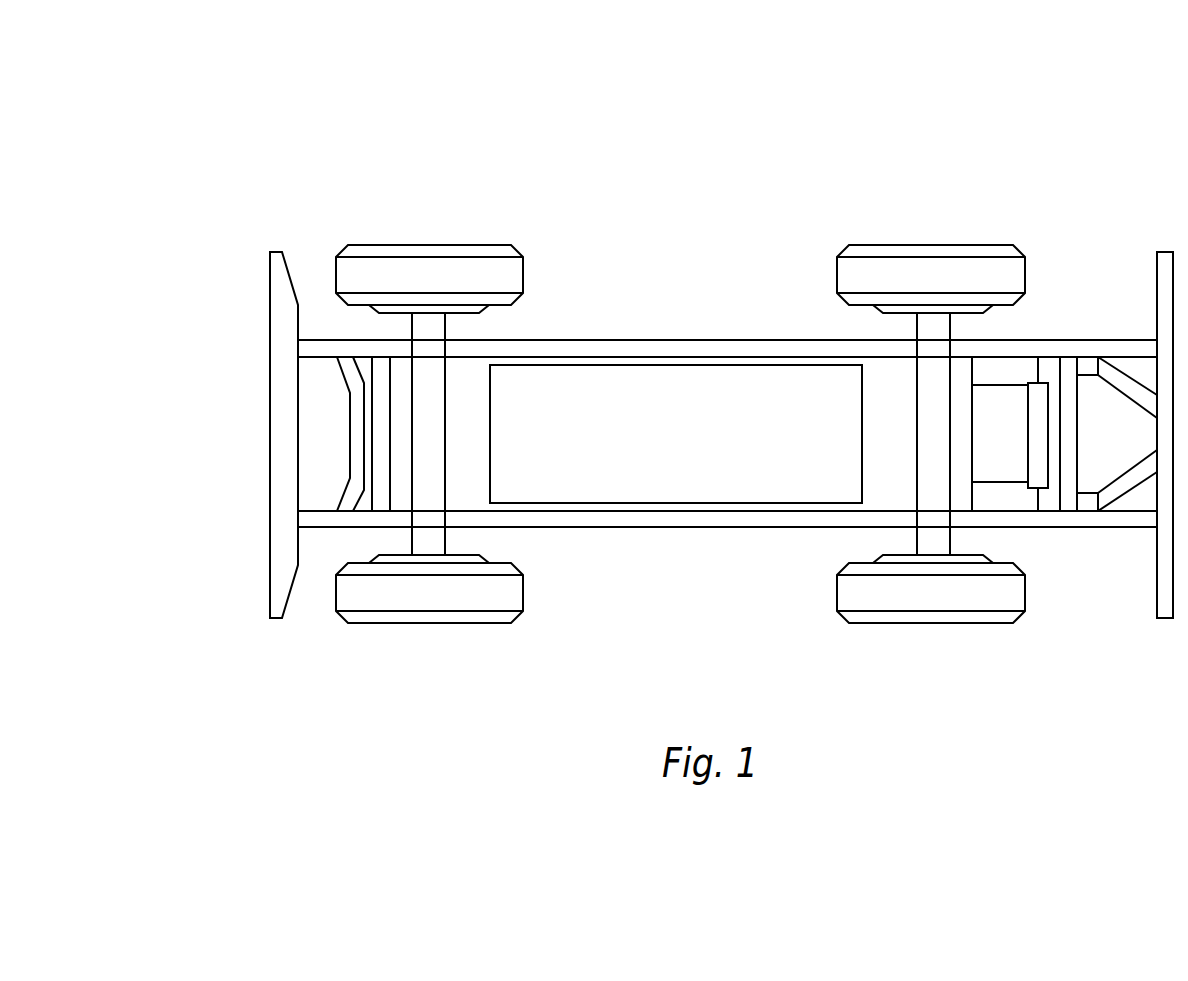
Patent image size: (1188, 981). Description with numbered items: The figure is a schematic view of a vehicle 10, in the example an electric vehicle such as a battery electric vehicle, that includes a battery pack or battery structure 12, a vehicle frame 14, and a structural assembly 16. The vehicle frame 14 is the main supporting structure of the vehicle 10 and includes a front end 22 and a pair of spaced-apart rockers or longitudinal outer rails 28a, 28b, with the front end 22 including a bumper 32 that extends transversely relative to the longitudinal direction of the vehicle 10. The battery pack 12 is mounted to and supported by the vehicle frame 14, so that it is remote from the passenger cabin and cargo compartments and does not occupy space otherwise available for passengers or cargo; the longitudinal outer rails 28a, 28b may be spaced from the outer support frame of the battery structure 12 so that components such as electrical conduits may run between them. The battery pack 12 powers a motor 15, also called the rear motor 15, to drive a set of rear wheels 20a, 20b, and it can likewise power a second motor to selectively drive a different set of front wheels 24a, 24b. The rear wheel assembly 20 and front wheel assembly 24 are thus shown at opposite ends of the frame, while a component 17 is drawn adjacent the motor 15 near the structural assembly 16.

The vehicle 10 is at (288, 120).
The battery pack 12 is at (652, 502).
The vehicle frame 14 is at (972, 388).
The motor 15 is at (1000, 402).
The structural assembly 16 is at (1000, 492).
The inverter 17 is at (1043, 450).
The rear wheel assembly 20 is at (942, 420).
The rear wheel 20a is at (918, 600).
The rear wheel 20b is at (962, 252).
The front end 22 is at (255, 557).
The front wheel assembly 24 is at (429, 413).
The front wheel 24a is at (418, 597).
The front wheel 24b is at (492, 252).
The longitudinal outer rail 28a is at (655, 350).
The longitudinal outer rail 28b is at (775, 518).
The bumper 32 is at (282, 385).